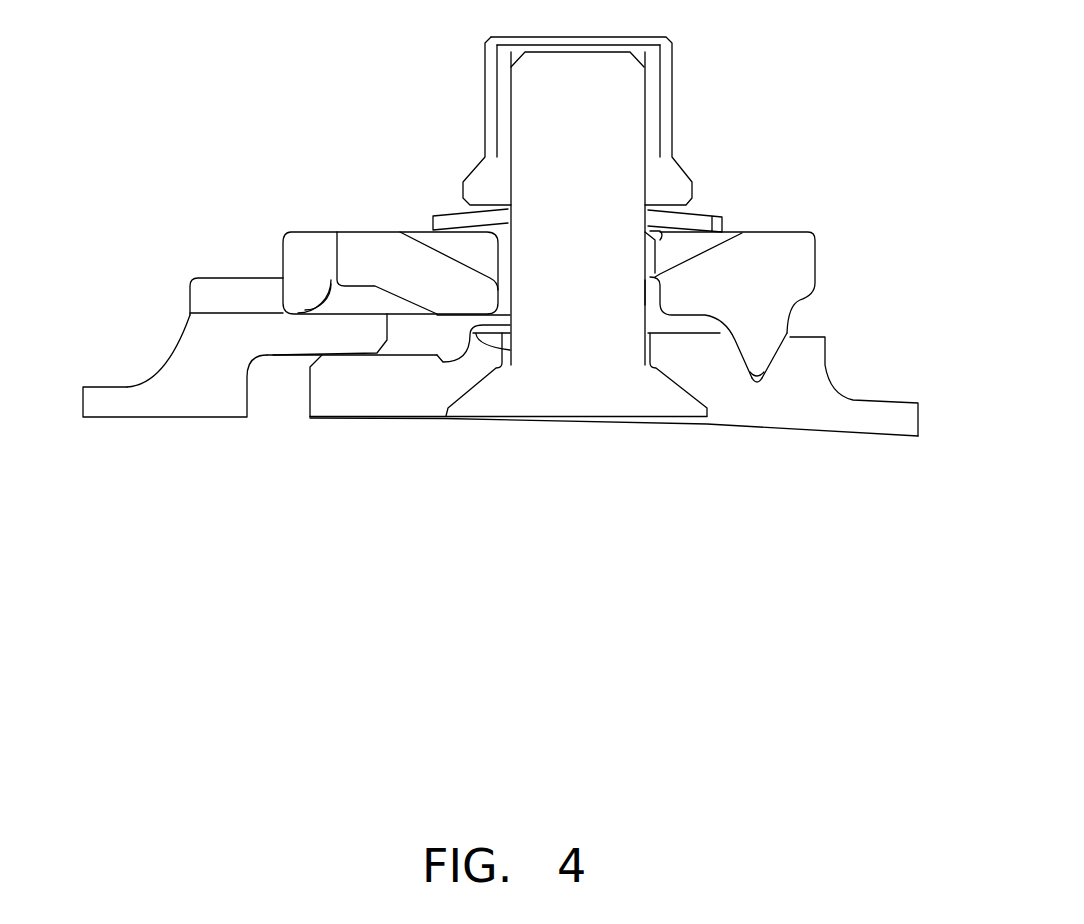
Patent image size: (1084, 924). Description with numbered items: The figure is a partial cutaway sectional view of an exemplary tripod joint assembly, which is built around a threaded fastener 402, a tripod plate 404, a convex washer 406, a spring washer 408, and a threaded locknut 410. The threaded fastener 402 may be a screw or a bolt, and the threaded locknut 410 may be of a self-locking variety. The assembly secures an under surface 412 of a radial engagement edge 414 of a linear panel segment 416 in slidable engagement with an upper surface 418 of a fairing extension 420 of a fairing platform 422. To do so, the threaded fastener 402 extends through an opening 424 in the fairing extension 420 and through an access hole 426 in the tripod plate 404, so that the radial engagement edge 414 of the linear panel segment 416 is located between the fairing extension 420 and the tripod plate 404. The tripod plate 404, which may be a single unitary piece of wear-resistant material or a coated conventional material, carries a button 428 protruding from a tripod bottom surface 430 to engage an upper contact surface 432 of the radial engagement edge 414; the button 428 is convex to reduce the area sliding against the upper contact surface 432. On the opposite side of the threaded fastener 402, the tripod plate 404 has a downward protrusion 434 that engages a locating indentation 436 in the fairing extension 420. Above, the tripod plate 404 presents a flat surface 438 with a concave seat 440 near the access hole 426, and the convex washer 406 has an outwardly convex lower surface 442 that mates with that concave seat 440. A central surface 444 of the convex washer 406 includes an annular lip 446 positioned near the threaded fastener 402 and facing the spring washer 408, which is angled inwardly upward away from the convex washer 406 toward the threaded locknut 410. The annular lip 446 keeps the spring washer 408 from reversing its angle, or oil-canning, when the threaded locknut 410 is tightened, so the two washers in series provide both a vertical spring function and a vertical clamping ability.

The threaded fastener 402 is at (614, 404).
The tripod plate 404 is at (752, 299).
The convex washer 406 is at (749, 224).
The spring washer 408 is at (566, 198).
The threaded locknut 410 is at (673, 69).
The under surface 412 is at (338, 357).
The radial engagement edge 414 is at (387, 337).
The linear panel segment 416 is at (169, 384).
The upper surface 418 is at (481, 338).
The fairing extension 420 is at (308, 393).
The fairing platform 422 is at (806, 431).
The opening 424 is at (652, 350).
The access hole 426 is at (645, 292).
The button 428 is at (313, 303).
The tripod bottom surface 430 is at (385, 323).
The upper contact surface 432 is at (223, 315).
The downward protrusion 434 is at (795, 314).
The locating indentation 436 is at (794, 341).
The flat surface 438 is at (362, 255).
The concave seat 440 is at (418, 240).
The outwardly convex lower surface 442 is at (718, 255).
The central surface 444 is at (492, 236).
The annular lip 446 is at (660, 233).